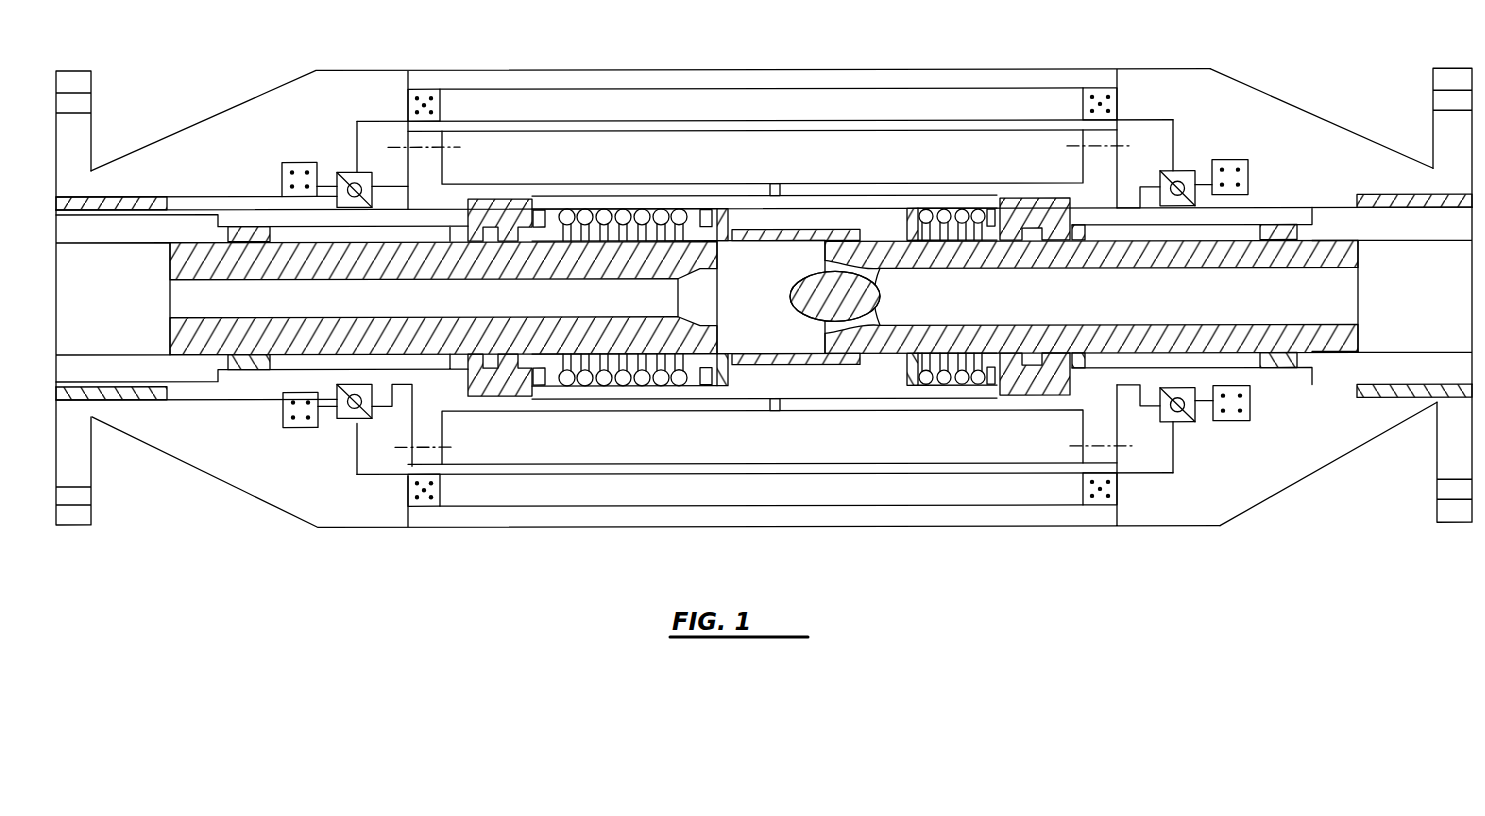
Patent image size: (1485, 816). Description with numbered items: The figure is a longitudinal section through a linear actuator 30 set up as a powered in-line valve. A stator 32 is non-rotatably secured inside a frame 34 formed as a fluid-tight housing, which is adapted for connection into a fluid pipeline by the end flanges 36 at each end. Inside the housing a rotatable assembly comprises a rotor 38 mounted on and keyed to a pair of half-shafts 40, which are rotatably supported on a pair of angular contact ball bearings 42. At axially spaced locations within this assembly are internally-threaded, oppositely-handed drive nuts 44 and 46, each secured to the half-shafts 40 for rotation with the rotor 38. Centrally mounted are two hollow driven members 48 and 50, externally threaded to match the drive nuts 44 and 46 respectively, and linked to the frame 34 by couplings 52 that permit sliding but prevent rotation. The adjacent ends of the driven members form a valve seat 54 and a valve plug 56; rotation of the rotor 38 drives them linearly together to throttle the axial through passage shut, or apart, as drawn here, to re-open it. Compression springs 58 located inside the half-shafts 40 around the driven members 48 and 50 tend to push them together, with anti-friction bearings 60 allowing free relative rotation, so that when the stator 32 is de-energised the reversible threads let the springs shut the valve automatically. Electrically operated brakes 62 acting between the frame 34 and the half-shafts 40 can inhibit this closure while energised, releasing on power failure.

The linear actuator 30 is at (266, 71).
The stator 32 is at (730, 100).
The frame 34 is at (1237, 93).
The end flanges 36 is at (83, 87).
The rotor 38 is at (598, 142).
The half-shafts 40 is at (393, 216).
The angular contact ball bearings 42 is at (343, 180).
The drive nut 44 is at (510, 205).
The drive nut 46 is at (1005, 205).
The driven member 48 is at (172, 262).
The driven member 50 is at (1338, 318).
The couplings 52 is at (125, 366).
The valve seat 54 is at (722, 312).
The valve plug 56 is at (800, 305).
The springs 58 is at (643, 215).
The anti-friction bearings 60 is at (542, 388).
The electrically operated brakes 62 is at (280, 200).